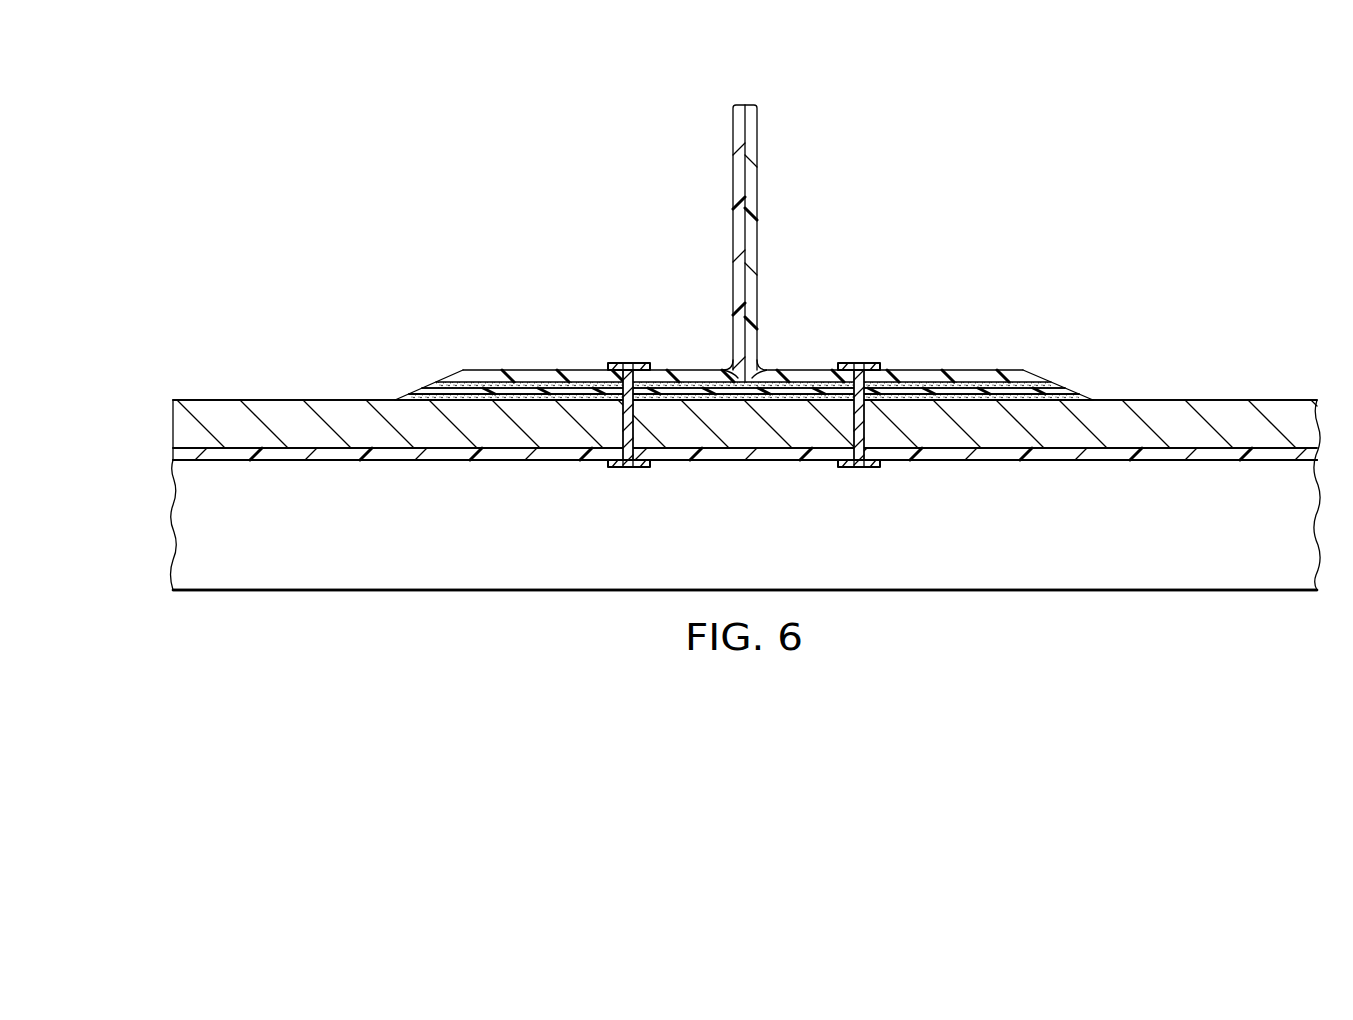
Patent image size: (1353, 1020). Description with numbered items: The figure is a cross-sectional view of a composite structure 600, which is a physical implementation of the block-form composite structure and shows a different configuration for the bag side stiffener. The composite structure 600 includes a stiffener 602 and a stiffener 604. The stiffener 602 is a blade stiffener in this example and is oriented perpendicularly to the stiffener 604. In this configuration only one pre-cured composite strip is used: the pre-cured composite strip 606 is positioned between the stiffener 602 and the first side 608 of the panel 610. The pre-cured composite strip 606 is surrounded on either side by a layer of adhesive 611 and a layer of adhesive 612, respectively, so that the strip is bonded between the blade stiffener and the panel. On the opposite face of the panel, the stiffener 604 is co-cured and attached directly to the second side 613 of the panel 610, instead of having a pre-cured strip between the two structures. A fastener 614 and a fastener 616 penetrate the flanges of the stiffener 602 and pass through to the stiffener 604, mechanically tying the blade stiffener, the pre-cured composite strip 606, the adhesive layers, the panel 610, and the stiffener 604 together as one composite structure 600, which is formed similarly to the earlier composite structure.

The composite structure 600 is at (1040, 148).
The stiffener 602 is at (732, 228).
The stiffener 604 is at (168, 527).
The pre-cured composite strip 606 is at (573, 387).
The first side 608 is at (282, 400).
The panel 610 is at (173, 423).
The layer of adhesive 611 is at (945, 385).
The layer of adhesive 612 is at (1003, 397).
The second side 613 is at (237, 460).
The fastener 614 is at (637, 362).
The fastener 616 is at (855, 362).